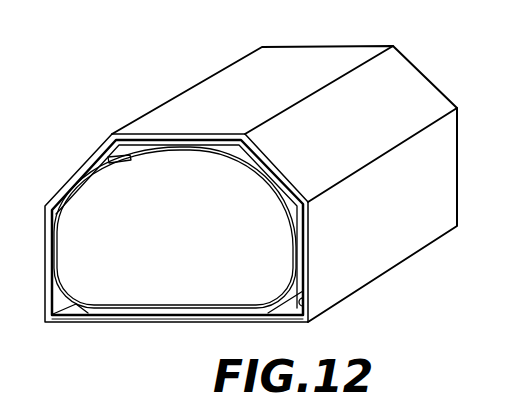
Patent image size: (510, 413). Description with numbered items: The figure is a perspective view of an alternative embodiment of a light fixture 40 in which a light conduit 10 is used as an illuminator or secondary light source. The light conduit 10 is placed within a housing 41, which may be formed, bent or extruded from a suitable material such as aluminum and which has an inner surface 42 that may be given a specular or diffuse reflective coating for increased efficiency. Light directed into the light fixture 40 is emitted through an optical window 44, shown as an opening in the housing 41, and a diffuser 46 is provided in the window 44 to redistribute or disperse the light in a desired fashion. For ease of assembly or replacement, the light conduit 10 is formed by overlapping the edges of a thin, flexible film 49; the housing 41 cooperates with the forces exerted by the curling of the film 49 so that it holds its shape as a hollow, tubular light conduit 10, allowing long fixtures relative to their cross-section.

The light conduit 10 is at (251, 192).
The light fixture 40 is at (183, 95).
The housing 41 is at (232, 72).
The inner surface 42 is at (299, 305).
The optical window 44 is at (262, 317).
The diffuser 46 is at (142, 322).
The thin, flexible film 49 is at (62, 264).